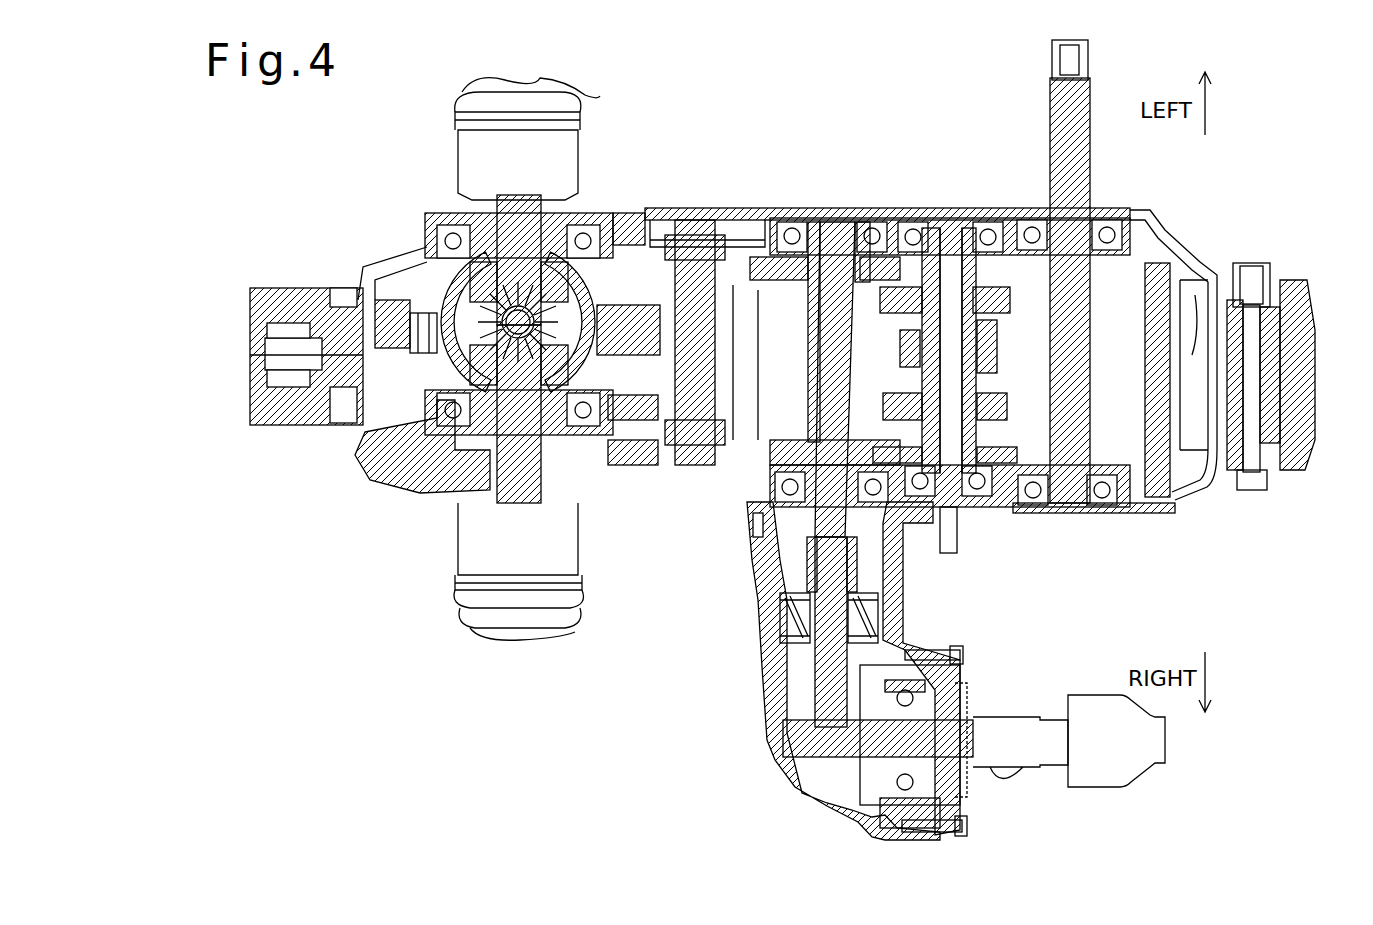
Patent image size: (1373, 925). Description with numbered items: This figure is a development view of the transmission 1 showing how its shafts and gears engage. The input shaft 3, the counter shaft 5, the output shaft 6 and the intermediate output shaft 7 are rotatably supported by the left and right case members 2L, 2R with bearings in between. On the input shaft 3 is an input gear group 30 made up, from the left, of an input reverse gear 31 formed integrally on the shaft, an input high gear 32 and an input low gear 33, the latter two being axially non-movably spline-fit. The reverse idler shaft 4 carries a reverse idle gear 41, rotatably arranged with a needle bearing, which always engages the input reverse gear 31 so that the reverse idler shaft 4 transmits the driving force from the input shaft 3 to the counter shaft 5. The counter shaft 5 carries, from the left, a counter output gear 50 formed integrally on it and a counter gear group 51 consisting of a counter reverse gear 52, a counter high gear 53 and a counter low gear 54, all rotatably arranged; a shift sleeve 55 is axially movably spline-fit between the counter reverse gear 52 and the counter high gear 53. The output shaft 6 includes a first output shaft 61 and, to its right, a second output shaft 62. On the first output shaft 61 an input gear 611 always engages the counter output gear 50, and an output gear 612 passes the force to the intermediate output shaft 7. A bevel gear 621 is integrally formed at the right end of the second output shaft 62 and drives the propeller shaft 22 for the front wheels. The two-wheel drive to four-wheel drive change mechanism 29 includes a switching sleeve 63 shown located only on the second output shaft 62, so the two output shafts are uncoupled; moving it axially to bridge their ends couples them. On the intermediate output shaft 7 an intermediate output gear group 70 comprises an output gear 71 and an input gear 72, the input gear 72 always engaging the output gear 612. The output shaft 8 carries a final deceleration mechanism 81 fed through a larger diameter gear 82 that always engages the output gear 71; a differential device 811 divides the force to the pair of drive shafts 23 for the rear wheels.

The transmission 1 is at (1233, 247).
The left case member 2L is at (435, 240).
The right case member 2R is at (410, 475).
The drive shafts 23 is at (595, 100).
The input shaft 3 is at (1092, 170).
The input gear group 30 is at (1320, 500).
The input reverse gear 31 is at (1255, 365).
The input high gear 32 is at (1236, 475).
The input low gear 33 is at (1225, 500).
The reverse idler shaft 4 is at (1160, 268).
The reverse idle gear 41 is at (1232, 352).
The counter shaft 5 is at (945, 225).
The counter output gear 50 is at (990, 285).
The counter gear group 51 is at (905, 152).
The counter reverse gear 52 is at (870, 225).
The counter high gear 53 is at (840, 300).
The counter low gear 54 is at (830, 225).
The shift sleeve 55 is at (1000, 335).
The output shaft 6 is at (900, 560).
The first output shaft 61 is at (785, 470).
The input gear 611 is at (778, 282).
The output gear 612 is at (905, 380).
The second output shaft 62 is at (800, 650).
The bevel gear 621 is at (770, 700).
The two-wheel drive to four-wheel drive switching sleeve 63 is at (789, 587).
The intermediate output shaft 7 is at (690, 225).
The intermediate output gear group 70 is at (632, 500).
The output gear 71 is at (690, 470).
The input gear 72 is at (665, 430).
The output shaft 8 is at (413, 407).
The final deceleration mechanism 81 is at (408, 291).
The differential device 811 is at (500, 282).
The larger diameter gear 82 is at (380, 318).
The two-wheel drive to four-wheel drive change mechanism 29 is at (775, 600).
The propeller shaft 22 is at (1085, 695).